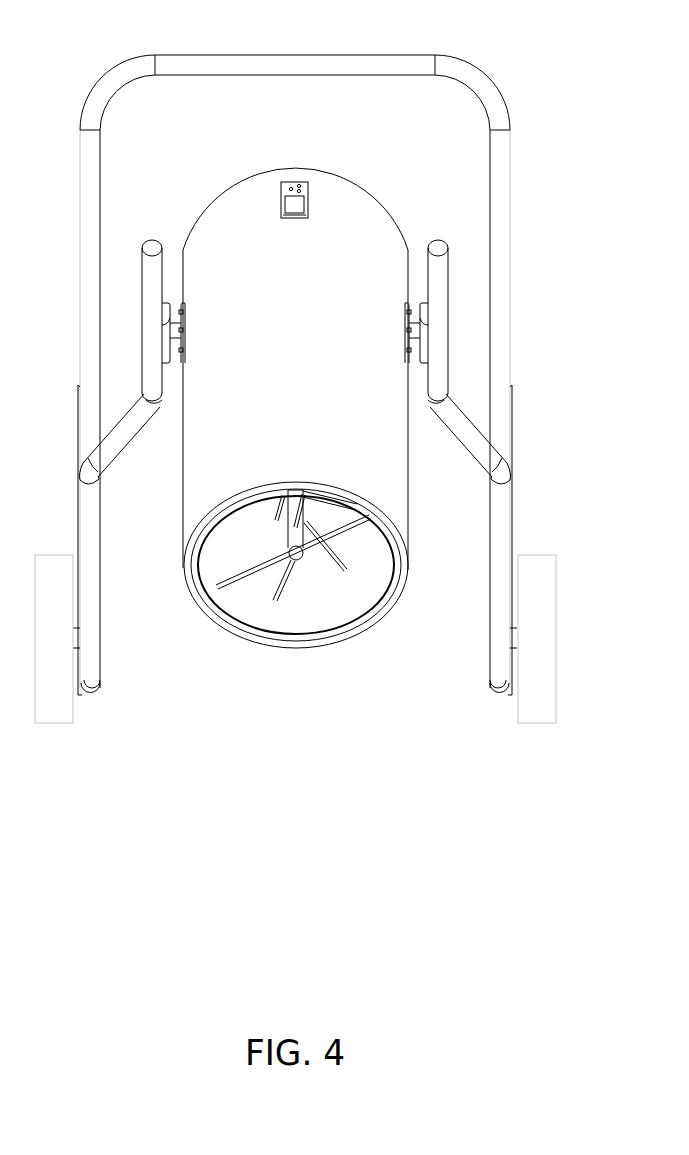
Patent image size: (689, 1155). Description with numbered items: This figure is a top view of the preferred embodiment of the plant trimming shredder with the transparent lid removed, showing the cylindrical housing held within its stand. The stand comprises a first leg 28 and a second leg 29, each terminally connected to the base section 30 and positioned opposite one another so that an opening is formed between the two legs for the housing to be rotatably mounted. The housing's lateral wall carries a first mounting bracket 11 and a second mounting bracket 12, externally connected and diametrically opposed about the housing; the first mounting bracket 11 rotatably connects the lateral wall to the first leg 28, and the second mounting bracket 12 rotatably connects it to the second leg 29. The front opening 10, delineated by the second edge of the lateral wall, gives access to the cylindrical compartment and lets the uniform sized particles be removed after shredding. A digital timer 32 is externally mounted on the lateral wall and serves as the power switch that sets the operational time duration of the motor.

The front opening 10 is at (343, 600).
The first mounting bracket 11 is at (185, 312).
The second mounting bracket 12 is at (405, 313).
The first leg 28 is at (151, 243).
The second leg 29 is at (439, 243).
The base section 30 is at (248, 62).
The digital timer 32 is at (308, 198).